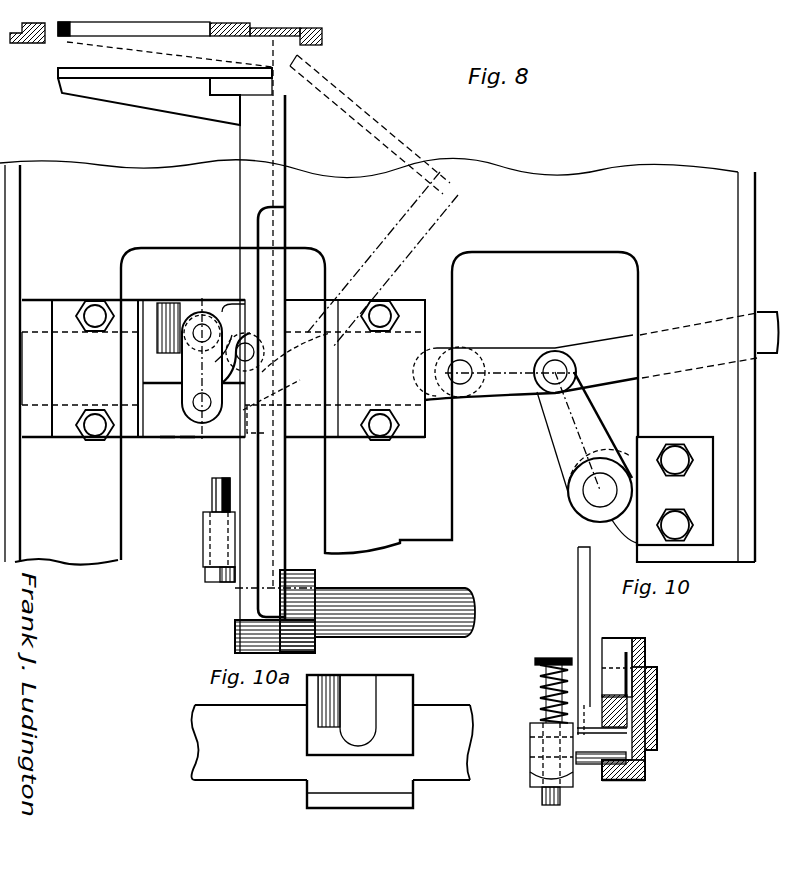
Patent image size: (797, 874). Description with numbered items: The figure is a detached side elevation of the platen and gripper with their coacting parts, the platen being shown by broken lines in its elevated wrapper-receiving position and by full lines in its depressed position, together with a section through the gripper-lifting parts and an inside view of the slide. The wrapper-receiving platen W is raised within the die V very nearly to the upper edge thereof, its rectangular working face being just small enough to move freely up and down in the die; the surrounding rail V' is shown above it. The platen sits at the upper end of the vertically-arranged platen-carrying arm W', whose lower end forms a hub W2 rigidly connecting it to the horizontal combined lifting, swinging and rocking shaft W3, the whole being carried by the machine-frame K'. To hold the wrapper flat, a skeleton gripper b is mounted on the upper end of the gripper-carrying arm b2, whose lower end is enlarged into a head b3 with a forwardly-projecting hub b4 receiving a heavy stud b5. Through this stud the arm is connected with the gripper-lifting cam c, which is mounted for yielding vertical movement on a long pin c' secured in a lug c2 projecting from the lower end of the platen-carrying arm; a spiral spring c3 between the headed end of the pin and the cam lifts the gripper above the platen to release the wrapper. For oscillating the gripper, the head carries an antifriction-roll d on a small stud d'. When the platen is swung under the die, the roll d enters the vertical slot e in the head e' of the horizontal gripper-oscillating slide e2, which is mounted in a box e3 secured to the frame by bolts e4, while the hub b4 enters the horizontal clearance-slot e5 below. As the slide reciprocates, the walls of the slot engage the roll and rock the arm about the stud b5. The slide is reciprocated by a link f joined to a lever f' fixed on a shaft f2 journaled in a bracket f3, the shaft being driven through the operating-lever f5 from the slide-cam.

In FIG. 8, the machine-frame K' is at (377, 361).
In FIG. 8, the die V is at (34, 44).
In FIG. 8, the upper rail V' is at (207, 44).
In FIG. 8, the wrapper-receiving platen W is at (165, 96).
In FIG. 8, the platen-carrying arm W' is at (262, 374).
In FIG. 8, the hub W2 is at (313, 552).
In FIG. 8, the combined lifting, swinging and rocking shaft W3 is at (365, 600).
In FIG. 8, the wrapper-gripper b is at (264, 72).
In FIG. 10, the gripper-carrying arm b2 is at (577, 598).
In FIG. 8, the head b3 is at (218, 369).
In FIG. 10, the head b3 is at (650, 714).
In FIG. 8, the hub b4 is at (170, 440).
In FIG. 10, the hub b4 is at (618, 781).
In FIG. 8, the stud b5 is at (188, 440).
In FIG. 10, the stud b5 is at (596, 770).
In FIG. 10, the gripper-lifting cam c is at (538, 756).
In FIG. 8, the pin c' is at (193, 498).
In FIG. 10, the pin c' is at (537, 799).
In FIG. 8, the lug c2 is at (205, 536).
In FIG. 10, the spiral spring c3 is at (540, 691).
In FIG. 8, the antifriction-roll d is at (276, 341).
In FIG. 10, the antifriction-roll d is at (653, 648).
In FIG. 8, the stud d' is at (201, 316).
In FIG. 10, the stud d' is at (673, 698).
In FIG. 8, the vertically-arranged slot e is at (214, 333).
In FIG. 10, the vertically-arranged slot e is at (617, 654).
In FIG. 10A, the vertically-arranged slot e is at (347, 710).
In FIG. 8, the head e' is at (133, 368).
In FIG. 10, the head e' is at (647, 709).
In FIG. 10A, the head e' is at (376, 715).
In FIG. 8, the gripper-oscillating slide e2 is at (319, 368).
In FIG. 10A, the gripper-oscillating slide e2 is at (333, 742).
In FIG. 8, the box e3 is at (223, 368).
In FIG. 8, the bolts e4 is at (237, 370).
In FIG. 8, the clearance-slot e5 is at (152, 440).
In FIG. 10, the clearance-slot e5 is at (657, 768).
In FIG. 10A, the clearance-slot e5 is at (360, 785).
In FIG. 8, the link f is at (414, 420).
In FIG. 8, the lever f' is at (584, 447).
In FIG. 8, the shaft f2 is at (605, 486).
In FIG. 8, the bracket f3 is at (675, 491).
In FIG. 8, the operating-lever f5 is at (690, 345).